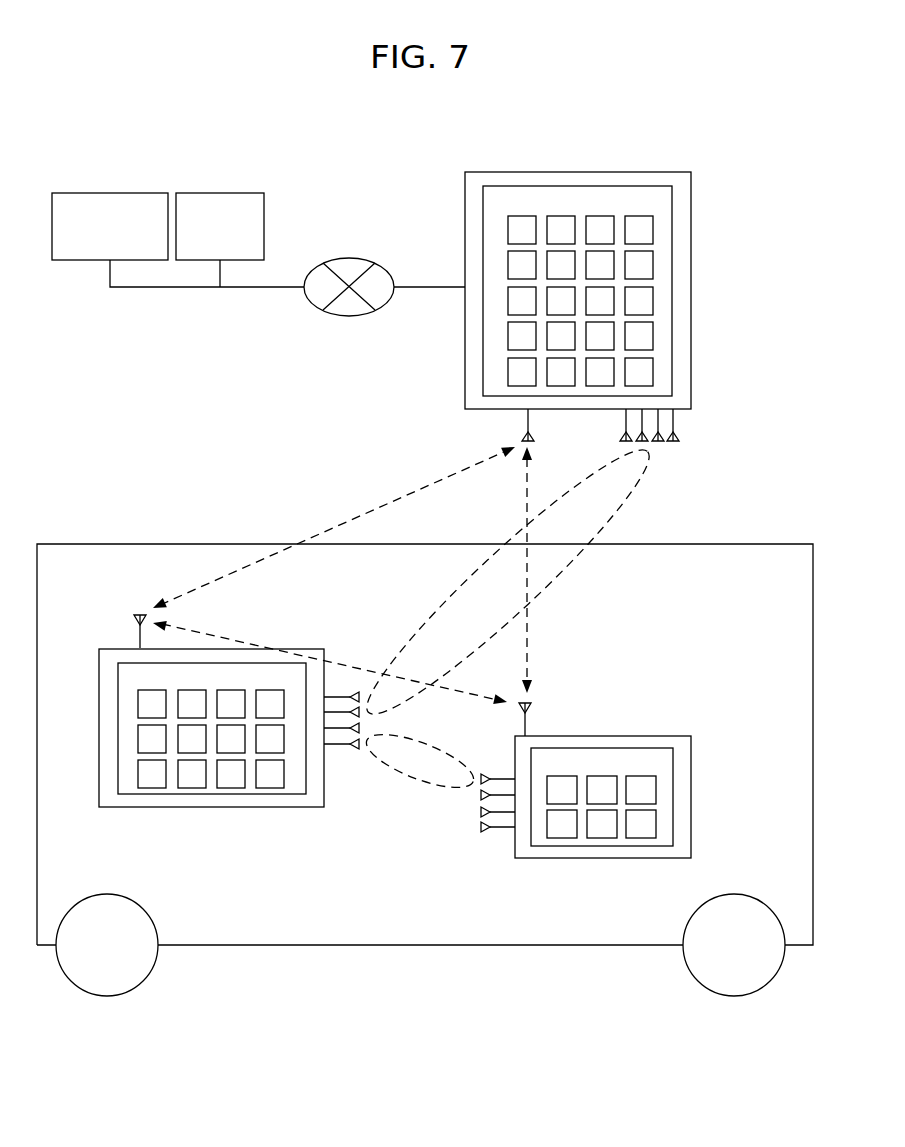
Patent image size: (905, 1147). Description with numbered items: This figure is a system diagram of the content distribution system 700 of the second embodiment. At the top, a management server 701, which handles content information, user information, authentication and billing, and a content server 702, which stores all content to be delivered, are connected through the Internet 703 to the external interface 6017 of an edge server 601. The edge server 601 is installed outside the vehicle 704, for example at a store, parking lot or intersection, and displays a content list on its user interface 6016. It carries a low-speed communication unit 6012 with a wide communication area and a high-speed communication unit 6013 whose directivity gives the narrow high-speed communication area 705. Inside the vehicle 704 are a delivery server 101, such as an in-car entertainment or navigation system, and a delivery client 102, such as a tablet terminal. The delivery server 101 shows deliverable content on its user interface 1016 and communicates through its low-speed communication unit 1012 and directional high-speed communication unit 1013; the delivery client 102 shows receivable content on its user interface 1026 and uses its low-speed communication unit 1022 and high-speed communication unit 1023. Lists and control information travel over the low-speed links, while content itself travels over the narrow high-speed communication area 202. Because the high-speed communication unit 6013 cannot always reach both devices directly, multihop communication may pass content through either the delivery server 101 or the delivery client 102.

The content distribution system 700 is at (588, 100).
The management server 701 is at (110, 193).
The content server 702 is at (220, 193).
The Internet 703 is at (350, 258).
The vehicle 704 is at (52, 544).
The high-speed communication area 705 is at (636, 490).
The edge server 601 is at (577, 263).
The user interface 6016 is at (578, 186).
The external interface 6017 is at (462, 288).
The low-speed communication unit 6012 is at (521, 437).
The high-speed communication unit 6013 is at (680, 437).
The delivery server 101 is at (208, 722).
The low-speed communication unit 1012 is at (140, 613).
The high-speed communication unit 1013 is at (352, 752).
The user interface 1016 is at (212, 795).
The delivery client 102 is at (637, 776).
The low-speed communication unit 1022 is at (535, 706).
The high-speed communication unit 1023 is at (485, 834).
The user interface 1026 is at (647, 748).
The communication area 202 is at (422, 784).